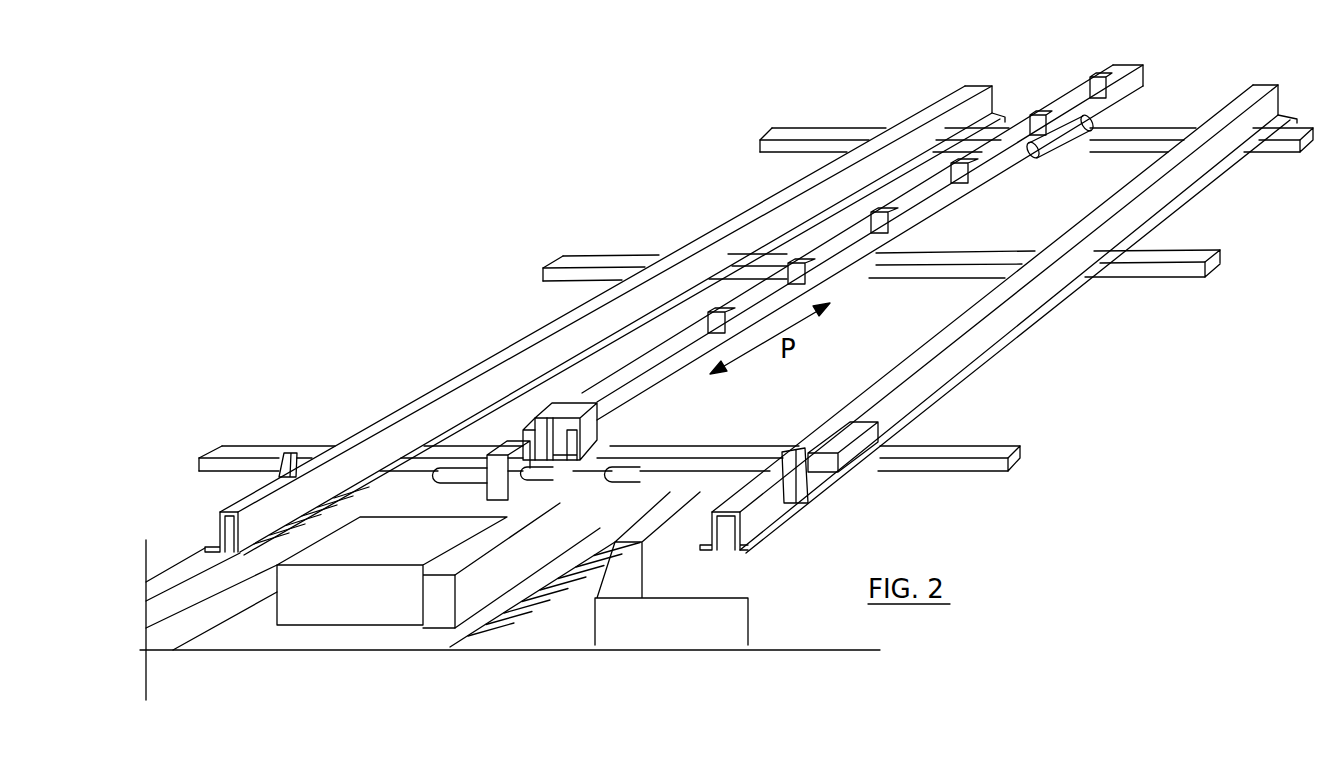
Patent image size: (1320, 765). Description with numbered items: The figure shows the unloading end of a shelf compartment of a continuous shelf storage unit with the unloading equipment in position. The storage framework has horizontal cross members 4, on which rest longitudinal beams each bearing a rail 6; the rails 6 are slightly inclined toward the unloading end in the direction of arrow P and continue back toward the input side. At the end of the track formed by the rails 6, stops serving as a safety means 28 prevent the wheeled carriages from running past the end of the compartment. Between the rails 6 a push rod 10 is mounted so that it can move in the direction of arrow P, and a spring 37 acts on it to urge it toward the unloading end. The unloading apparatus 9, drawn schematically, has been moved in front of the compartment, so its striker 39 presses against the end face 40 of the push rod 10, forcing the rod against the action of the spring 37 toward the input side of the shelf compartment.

The horizontal cross member 4 is at (1300, 150).
The rail 6 is at (700, 247).
The unloading apparatus 9 is at (740, 622).
The push rod 10 is at (937, 205).
The safety means 28 is at (286, 453).
The spring 37 is at (1058, 158).
The striker 39 is at (492, 455).
The end face 40 is at (528, 428).